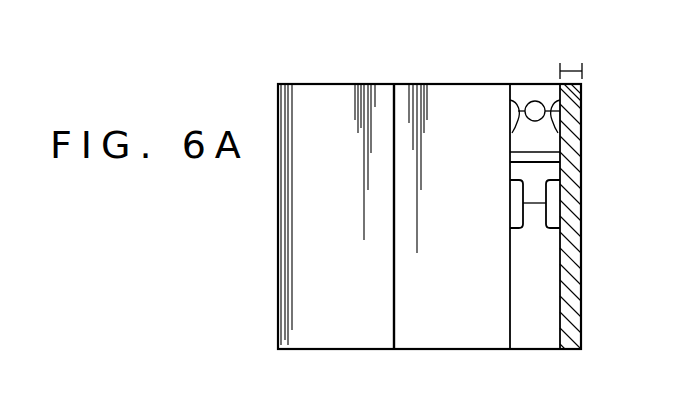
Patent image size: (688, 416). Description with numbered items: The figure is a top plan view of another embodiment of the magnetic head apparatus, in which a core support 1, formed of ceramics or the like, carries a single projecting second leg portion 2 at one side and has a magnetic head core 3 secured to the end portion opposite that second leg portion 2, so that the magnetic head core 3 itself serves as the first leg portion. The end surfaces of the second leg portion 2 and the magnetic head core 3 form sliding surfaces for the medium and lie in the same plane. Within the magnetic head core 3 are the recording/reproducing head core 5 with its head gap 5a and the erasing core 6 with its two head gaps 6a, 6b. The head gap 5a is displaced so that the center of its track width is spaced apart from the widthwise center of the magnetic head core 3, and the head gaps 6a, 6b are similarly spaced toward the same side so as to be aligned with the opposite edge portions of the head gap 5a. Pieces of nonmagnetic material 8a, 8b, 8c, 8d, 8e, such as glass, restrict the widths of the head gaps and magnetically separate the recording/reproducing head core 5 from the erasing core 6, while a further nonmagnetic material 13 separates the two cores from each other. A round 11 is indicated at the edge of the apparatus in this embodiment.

The core support 1 is at (446, 338).
The second leg portion 2 is at (326, 97).
The magnetic head core 3 is at (590, 172).
The recording/reproducing head core 5 is at (538, 339).
The head gap 5a is at (532, 204).
The erasing core 6 is at (523, 92).
The head gap 6a is at (515, 121).
The head gap 6b is at (573, 121).
The nonmagnetic material 8a is at (572, 215).
The nonmagnetic material 8b is at (510, 213).
The nonmagnetic material 8c is at (535, 100).
The nonmagnetic material 8d is at (510, 111).
The nonmagnetic material 8e is at (561, 111).
The round 11 is at (571, 68).
The nonmagnetic material 13 is at (508, 157).